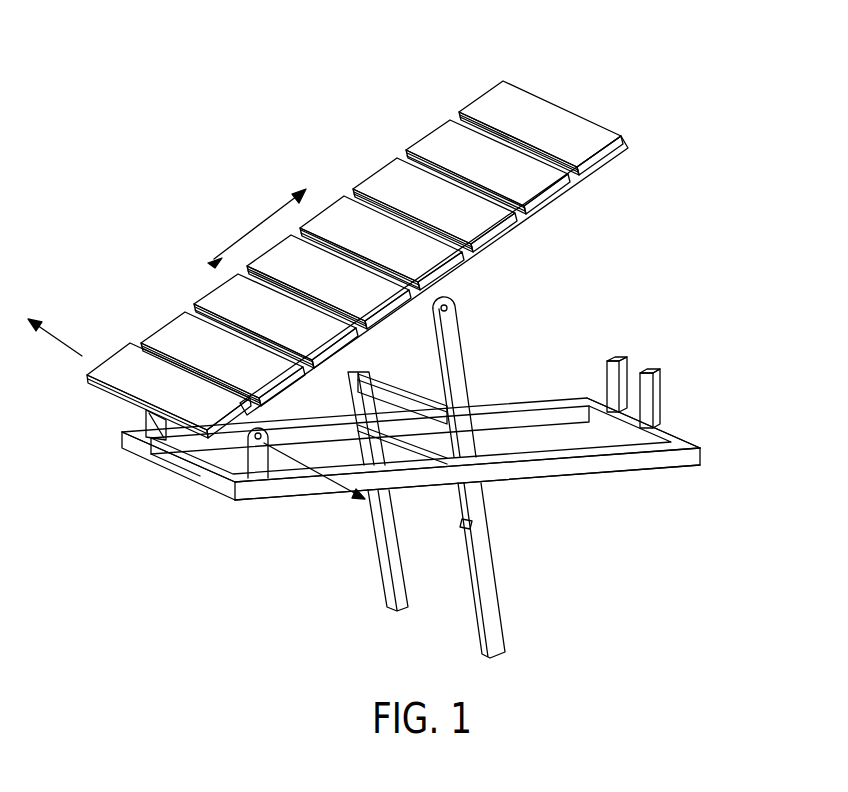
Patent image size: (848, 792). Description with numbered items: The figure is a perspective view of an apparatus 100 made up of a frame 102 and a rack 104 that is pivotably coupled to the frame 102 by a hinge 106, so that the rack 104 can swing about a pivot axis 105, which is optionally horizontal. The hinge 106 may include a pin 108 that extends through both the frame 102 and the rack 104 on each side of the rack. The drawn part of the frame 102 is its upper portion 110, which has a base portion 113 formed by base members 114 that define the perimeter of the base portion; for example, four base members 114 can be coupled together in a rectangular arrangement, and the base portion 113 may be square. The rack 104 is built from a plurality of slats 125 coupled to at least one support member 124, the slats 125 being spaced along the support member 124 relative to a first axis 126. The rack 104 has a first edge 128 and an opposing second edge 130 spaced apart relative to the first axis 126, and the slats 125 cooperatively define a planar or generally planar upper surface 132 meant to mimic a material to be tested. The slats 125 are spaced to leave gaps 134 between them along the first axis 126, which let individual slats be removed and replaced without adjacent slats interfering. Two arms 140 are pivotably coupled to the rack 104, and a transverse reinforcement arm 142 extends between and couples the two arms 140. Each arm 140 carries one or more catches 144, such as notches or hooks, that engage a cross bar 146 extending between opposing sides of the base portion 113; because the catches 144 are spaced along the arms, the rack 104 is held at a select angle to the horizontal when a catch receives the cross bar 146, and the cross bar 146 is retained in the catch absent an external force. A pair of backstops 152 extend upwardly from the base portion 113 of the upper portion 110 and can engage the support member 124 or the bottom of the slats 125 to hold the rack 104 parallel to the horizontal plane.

The apparatus 100 is at (151, 86).
The frame 102 is at (439, 408).
The rack 104 is at (351, 228).
The pivot axis 105 is at (322, 486).
The hinge 106 is at (245, 444).
The pin 108 is at (263, 446).
The upper portion 110 is at (565, 479).
The base portion 113 is at (492, 466).
The base member 114 is at (665, 470).
The support member 124 is at (616, 168).
The slats 125 is at (359, 212).
The first axis 126 is at (255, 222).
The first edge 128 is at (100, 384).
The second edge 130 is at (532, 97).
The upper surface 132 is at (163, 321).
The gaps 134 is at (355, 193).
The arm 140 is at (385, 598).
The transverse reinforcement arm 142 is at (385, 388).
The catches 144 is at (462, 524).
The cross bar 146 is at (396, 441).
The backstop 152 is at (650, 378).